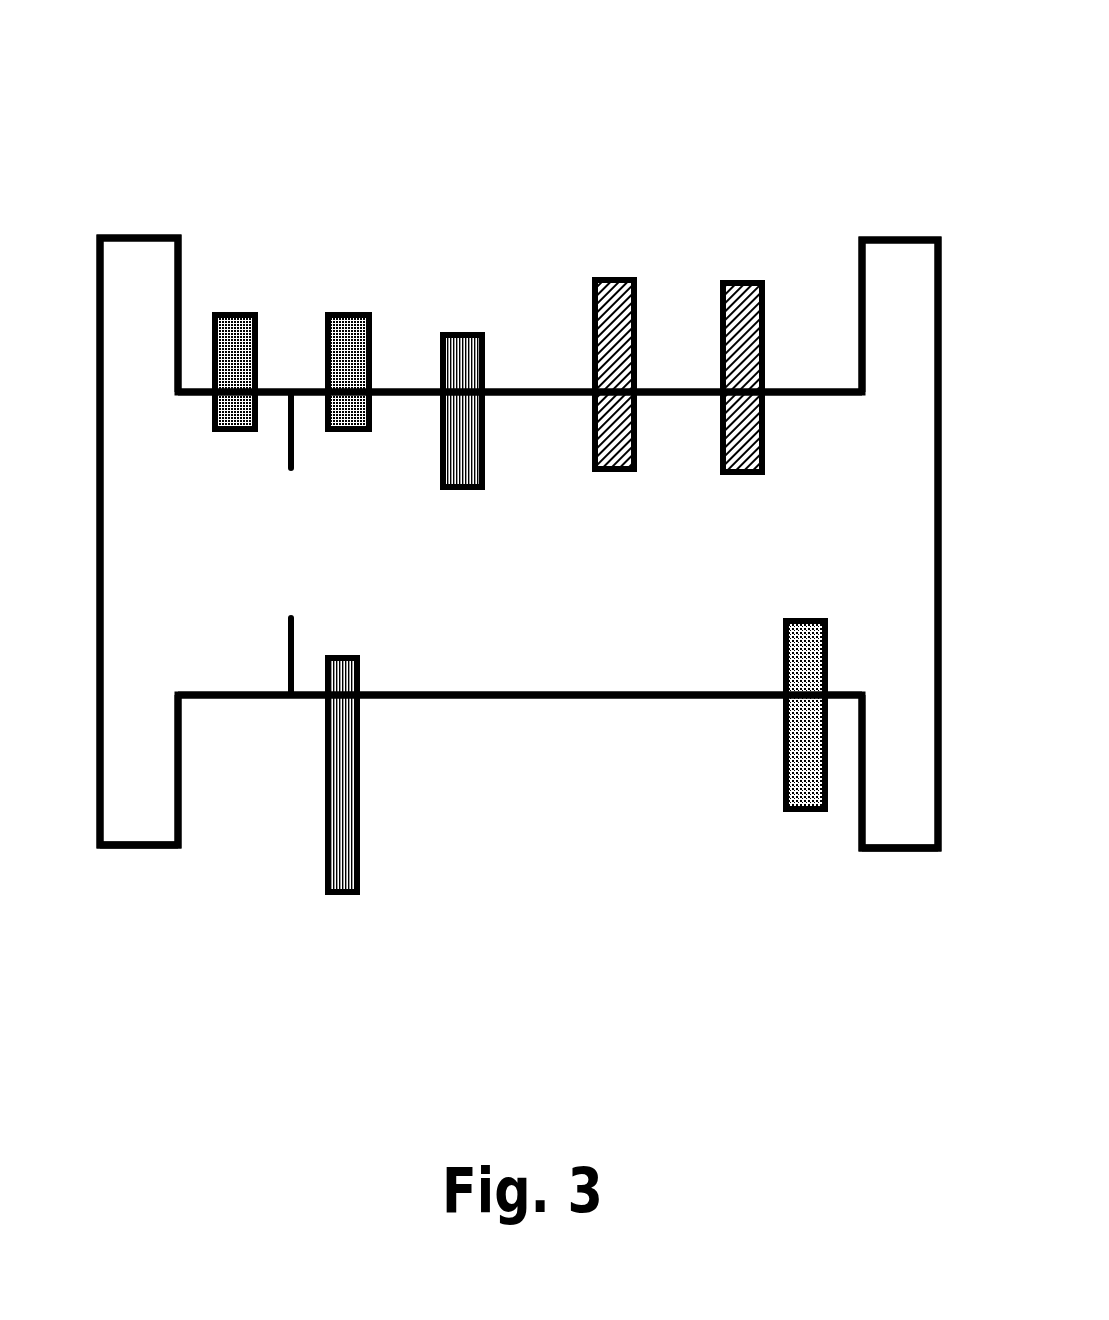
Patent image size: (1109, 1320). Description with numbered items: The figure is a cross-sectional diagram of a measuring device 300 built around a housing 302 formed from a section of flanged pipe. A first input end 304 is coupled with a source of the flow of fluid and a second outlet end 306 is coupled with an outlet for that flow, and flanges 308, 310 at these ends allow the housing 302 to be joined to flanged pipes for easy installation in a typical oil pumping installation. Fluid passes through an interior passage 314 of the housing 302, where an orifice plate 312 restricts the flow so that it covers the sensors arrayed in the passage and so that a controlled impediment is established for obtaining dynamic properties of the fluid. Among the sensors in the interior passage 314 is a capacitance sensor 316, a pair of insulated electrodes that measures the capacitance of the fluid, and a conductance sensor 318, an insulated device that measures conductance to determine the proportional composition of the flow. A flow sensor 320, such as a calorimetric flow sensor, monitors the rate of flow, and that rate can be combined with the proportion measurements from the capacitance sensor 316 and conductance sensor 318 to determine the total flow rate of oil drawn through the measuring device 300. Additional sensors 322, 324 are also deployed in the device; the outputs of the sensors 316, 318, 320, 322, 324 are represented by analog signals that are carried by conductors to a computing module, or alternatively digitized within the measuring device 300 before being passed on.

The measuring device 300 is at (168, 146).
The housing 302 is at (551, 704).
The first input end 304 is at (962, 866).
The second outlet end 306 is at (77, 850).
The flange 308 is at (895, 850).
The flange 310 is at (150, 850).
The orifice plate 312 is at (286, 457).
The interior passage 314 is at (698, 657).
The capacitance sensor 316 is at (768, 320).
The conductance sensor 318 is at (640, 316).
The flow sensor 320 is at (800, 813).
The sensor 322 is at (237, 312).
The sensor 324 is at (460, 333).